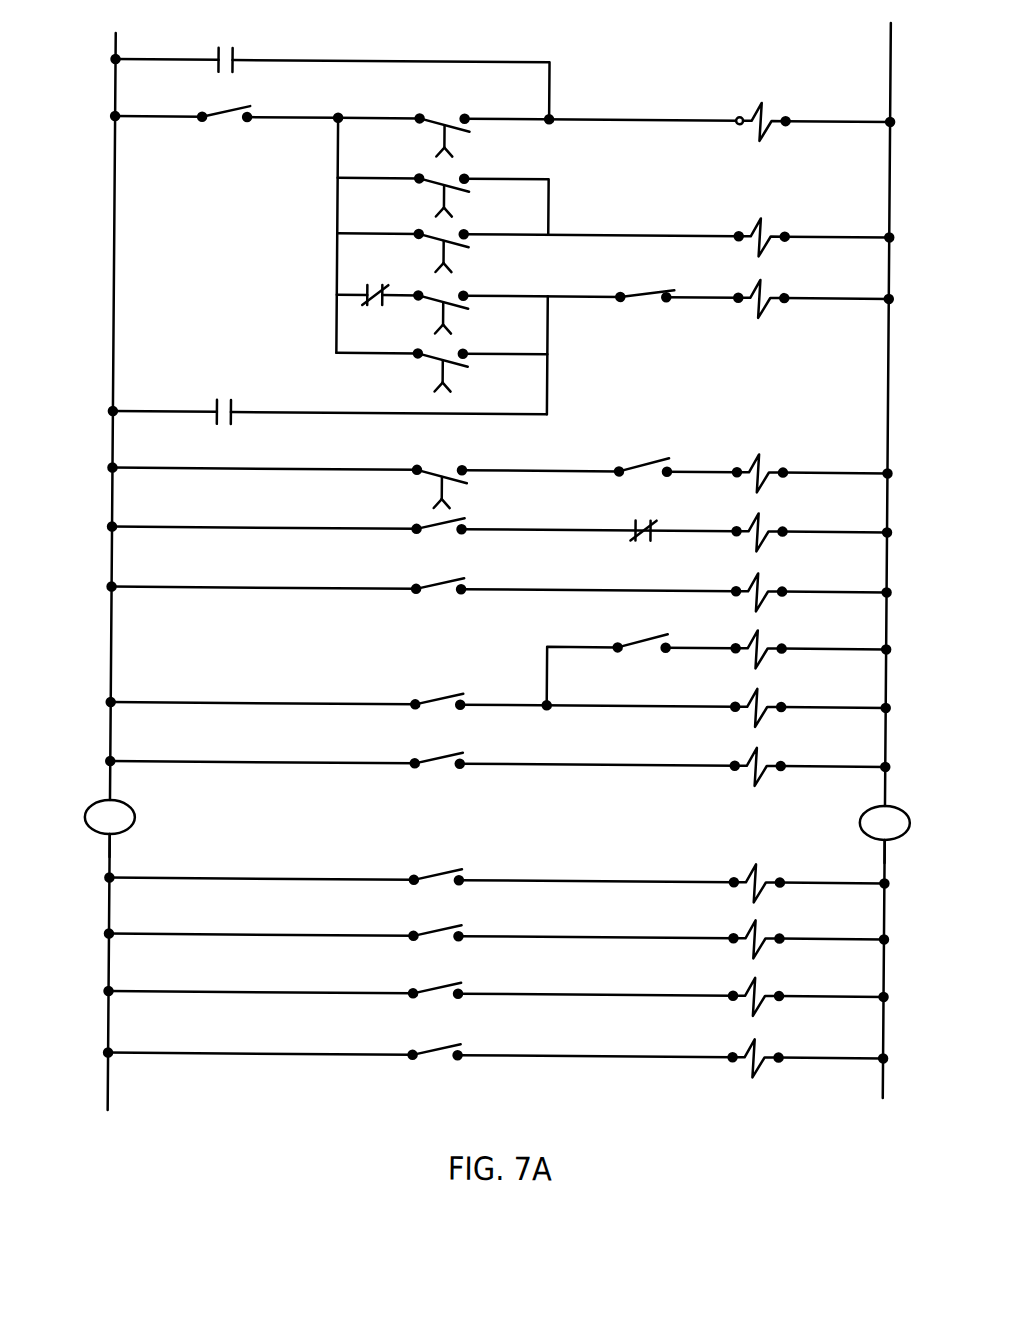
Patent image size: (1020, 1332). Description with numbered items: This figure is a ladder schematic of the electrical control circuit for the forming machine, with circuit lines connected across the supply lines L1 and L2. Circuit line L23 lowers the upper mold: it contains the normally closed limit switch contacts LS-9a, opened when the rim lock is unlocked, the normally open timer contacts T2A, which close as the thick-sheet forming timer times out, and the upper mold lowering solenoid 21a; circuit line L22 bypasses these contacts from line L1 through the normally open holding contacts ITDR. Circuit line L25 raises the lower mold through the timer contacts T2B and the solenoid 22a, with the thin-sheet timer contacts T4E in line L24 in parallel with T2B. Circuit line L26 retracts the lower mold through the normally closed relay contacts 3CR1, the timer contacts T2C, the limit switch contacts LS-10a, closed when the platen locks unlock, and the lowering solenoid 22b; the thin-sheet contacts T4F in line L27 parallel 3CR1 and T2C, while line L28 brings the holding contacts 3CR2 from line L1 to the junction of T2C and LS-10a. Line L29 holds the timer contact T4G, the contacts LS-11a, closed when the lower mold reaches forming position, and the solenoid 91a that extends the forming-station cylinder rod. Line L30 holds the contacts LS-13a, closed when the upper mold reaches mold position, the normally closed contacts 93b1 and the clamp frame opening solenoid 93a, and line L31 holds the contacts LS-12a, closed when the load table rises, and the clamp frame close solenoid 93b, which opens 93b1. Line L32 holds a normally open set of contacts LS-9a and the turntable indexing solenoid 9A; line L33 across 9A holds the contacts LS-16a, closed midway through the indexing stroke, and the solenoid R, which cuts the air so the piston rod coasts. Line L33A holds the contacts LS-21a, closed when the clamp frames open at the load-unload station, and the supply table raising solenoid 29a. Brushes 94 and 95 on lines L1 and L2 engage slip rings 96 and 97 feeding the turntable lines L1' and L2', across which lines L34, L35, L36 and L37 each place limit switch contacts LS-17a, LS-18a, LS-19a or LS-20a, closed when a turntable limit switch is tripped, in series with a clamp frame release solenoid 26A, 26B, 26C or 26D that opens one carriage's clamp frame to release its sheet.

The line L1 is at (81, 416).
The circuit line L1' is at (77, 972).
The line L2 is at (912, 414).
The circuit line L2' is at (907, 969).
The current carrying brush 94 is at (102, 798).
The current carrying brush 95 is at (890, 800).
The slip ring 96 is at (98, 839).
The slip ring 97 is at (884, 840).
The holding contacts ITDR is at (222, 53).
The circuit line L22 is at (512, 61).
The limit switch contacts LS-9a is at (212, 115).
The timer contacts T2A is at (427, 131).
The circuit line L23 is at (601, 116).
The upper mold lowering solenoid 21a is at (766, 113).
The timer contacts T4E is at (427, 189).
The circuit line L24 is at (550, 176).
The timer contacts T2B is at (427, 245).
The circuit line L25 is at (587, 235).
The solenoid 22a is at (770, 226).
The relay contacts 3CR1 is at (362, 306).
The timer contacts T2C is at (427, 317).
The circuit line L26 is at (576, 298).
The limit switch contacts LS-10a is at (640, 293).
The lowering solenoid 22b is at (771, 286).
The timer contacts T4F is at (427, 367).
The circuit line L27 is at (493, 351).
The holding contacts 3CR2 is at (224, 408).
The line 28 L28 is at (466, 412).
The timer contact T4G is at (427, 480).
The circuit line L29 is at (506, 469).
The limit switch contacts LS-11a is at (647, 467).
The solenoid 91a is at (769, 469).
The limit switch contacts LS-13a is at (446, 540).
The circuit line L30 is at (506, 528).
The limit switch contacts 93b1 is at (638, 521).
The clamp frame opening solenoid 93a is at (769, 527).
The limit switch contacts LS-12a is at (448, 597).
The circuit line L31 is at (507, 588).
The clamp frame close solenoid 93b is at (769, 585).
The line L33 is at (562, 647).
The limit switch contacts LS-16a is at (642, 645).
The solenoid R is at (770, 644).
The line 32 L32 is at (318, 704).
The solenoid 9A is at (770, 704).
The limit switch contacts LS-21a is at (441, 772).
The circuit line L33A is at (564, 769).
The solenoid 29a is at (770, 761).
The limit switch contacts LS-17a is at (433, 870).
The circuit line L34 is at (576, 878).
The solenoid 26A is at (770, 880).
The limit switch contacts LS-18a is at (433, 927).
The circuit line L35 is at (576, 933).
The solenoid 26B is at (770, 936).
The limit switch contacts LS-19a is at (433, 985).
The circuit line L36 is at (576, 991).
The solenoid 26C is at (770, 994).
The limit switch contacts LS-20a is at (441, 1047).
The circuit line L37 is at (576, 1048).
The solenoid 26D is at (770, 1053).